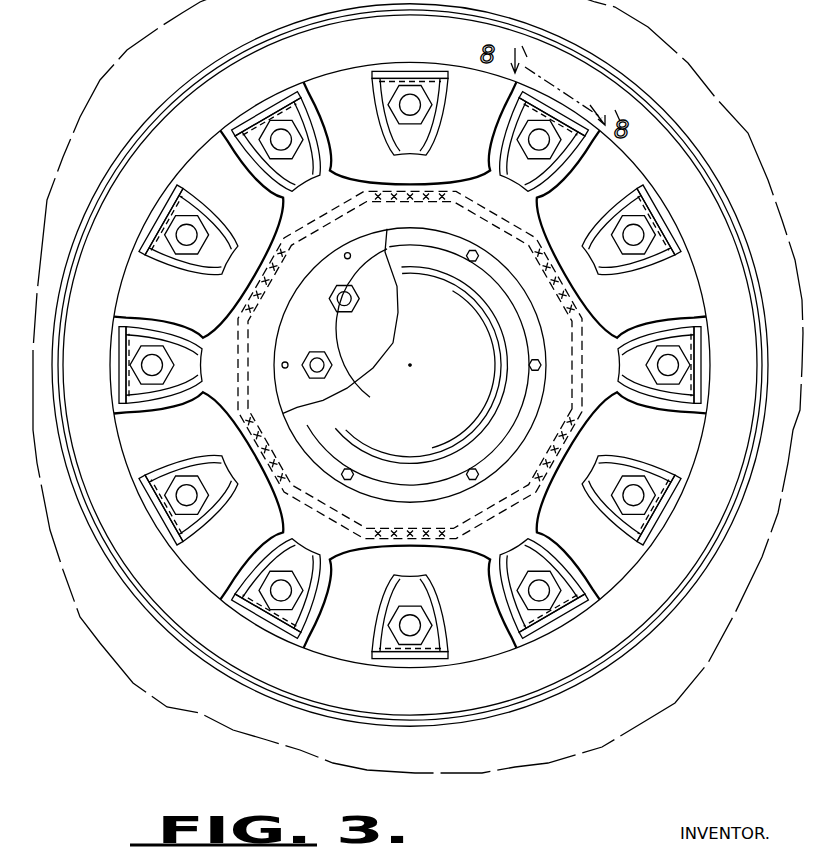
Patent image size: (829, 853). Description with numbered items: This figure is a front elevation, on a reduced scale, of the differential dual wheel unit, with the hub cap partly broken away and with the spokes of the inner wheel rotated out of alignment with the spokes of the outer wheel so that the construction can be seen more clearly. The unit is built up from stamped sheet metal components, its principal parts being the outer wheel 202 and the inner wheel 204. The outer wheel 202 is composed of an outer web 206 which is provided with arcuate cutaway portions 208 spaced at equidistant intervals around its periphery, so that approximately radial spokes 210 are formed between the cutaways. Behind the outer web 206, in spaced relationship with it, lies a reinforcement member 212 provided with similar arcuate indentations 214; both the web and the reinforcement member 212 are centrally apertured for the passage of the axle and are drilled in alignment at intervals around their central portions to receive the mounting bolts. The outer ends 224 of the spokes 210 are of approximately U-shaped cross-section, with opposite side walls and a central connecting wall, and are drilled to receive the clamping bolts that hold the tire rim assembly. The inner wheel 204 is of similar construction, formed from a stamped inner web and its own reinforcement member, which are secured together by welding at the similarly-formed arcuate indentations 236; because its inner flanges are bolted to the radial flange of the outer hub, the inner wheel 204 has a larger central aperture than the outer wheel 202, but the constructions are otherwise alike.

The outer wheel 202 is at (628, 308).
The inner wheel 204 is at (226, 298).
The outer web 206 is at (358, 546).
The arcuate cutaway portions 208 is at (192, 484).
The spokes 210 is at (143, 312).
The reinforcement member 212 is at (352, 527).
The arcuate indentations 214 is at (290, 440).
The outer ends of the spokes 224 is at (313, 100).
The arcuate indentations 236 is at (552, 204).